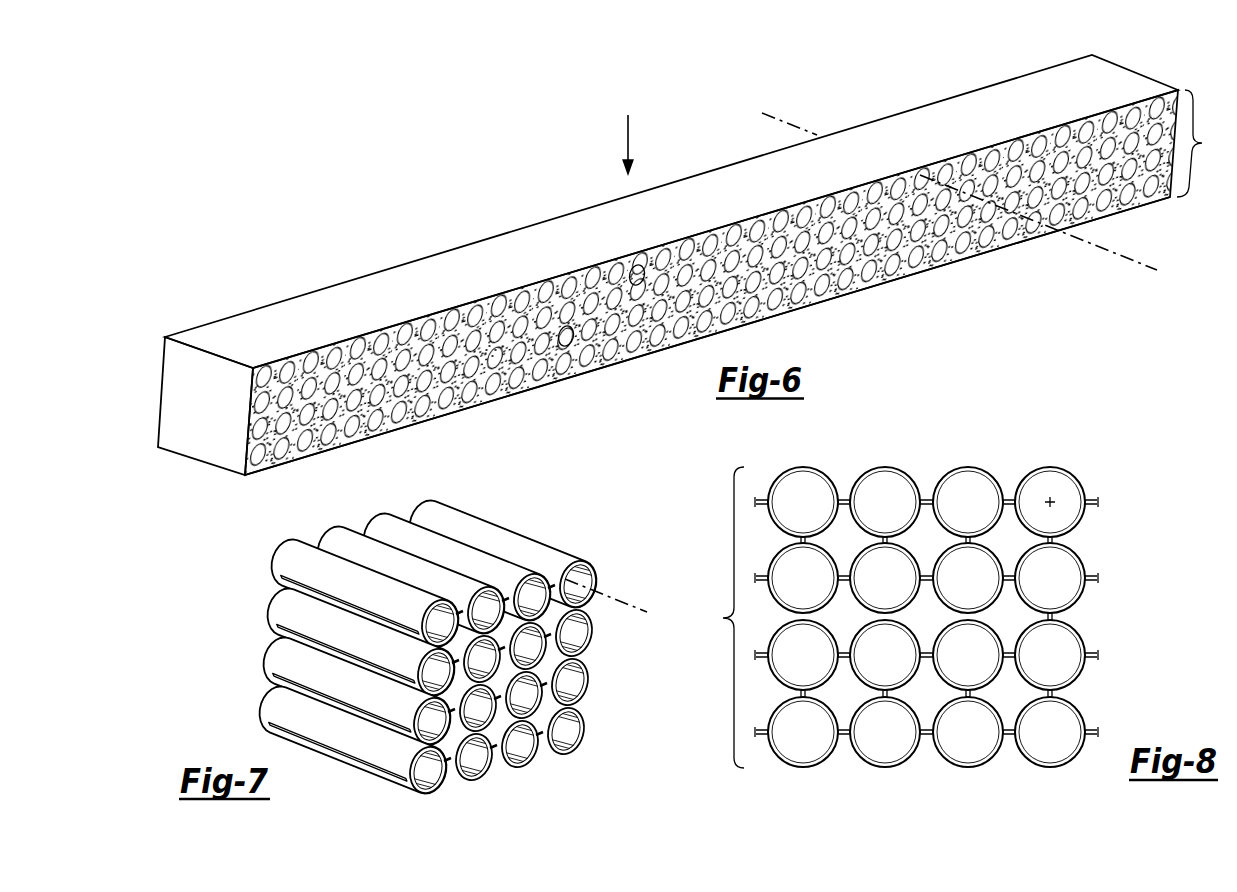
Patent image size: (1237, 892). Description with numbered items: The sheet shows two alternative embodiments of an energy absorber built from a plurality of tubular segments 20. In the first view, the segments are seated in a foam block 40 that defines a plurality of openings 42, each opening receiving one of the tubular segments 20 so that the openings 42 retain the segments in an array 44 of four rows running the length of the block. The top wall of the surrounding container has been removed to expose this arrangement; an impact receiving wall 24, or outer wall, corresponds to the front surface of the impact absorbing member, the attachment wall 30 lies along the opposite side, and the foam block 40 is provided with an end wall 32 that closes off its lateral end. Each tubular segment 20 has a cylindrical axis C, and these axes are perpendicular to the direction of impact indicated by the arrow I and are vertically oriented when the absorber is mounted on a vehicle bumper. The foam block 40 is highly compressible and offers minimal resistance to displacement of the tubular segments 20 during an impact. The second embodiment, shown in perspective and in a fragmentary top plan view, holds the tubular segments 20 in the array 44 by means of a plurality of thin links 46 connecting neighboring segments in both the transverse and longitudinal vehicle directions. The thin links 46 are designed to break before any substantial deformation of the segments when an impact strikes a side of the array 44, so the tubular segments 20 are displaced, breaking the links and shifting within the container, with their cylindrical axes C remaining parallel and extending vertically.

In FIG. 6, the tubular segments 20 is at (636, 266).
In FIG. 7, the tubular segments 20 is at (487, 529).
In FIG. 8, the tubular segments 20 is at (968, 467).
In FIG. 6, the impact receiving wall 24 is at (340, 303).
In FIG. 6, the attachment wall 30 is at (878, 290).
In FIG. 6, the end wall 32 is at (212, 437).
In FIG. 6, the foam block 40 is at (490, 353).
In FIG. 6, the openings 42 is at (570, 336).
In FIG. 6, the array 44 is at (735, 282).
In FIG. 8, the array 44 is at (899, 617).
In FIG. 7, the thin links 46 is at (282, 627).
In FIG. 8, the thin links 46 is at (1060, 616).
In FIG. 6, the cylindrical axis C is at (1128, 258).
In FIG. 7, the cylindrical axis C is at (614, 603).
In FIG. 8, the cylindrical axis C is at (1052, 502).
In FIG. 6, the arrow indicating direction of impact I is at (628, 140).